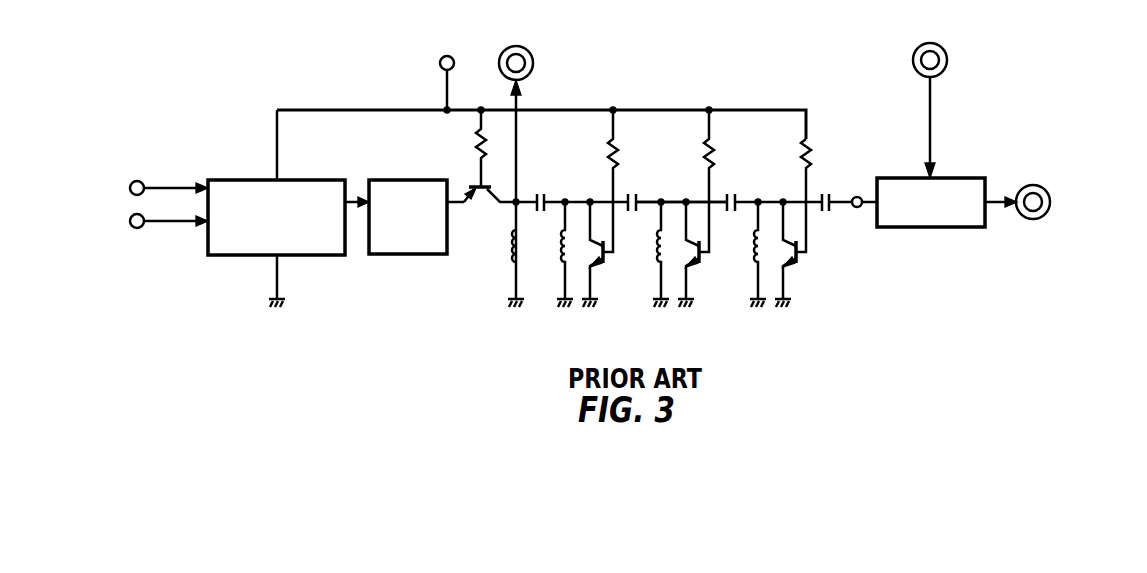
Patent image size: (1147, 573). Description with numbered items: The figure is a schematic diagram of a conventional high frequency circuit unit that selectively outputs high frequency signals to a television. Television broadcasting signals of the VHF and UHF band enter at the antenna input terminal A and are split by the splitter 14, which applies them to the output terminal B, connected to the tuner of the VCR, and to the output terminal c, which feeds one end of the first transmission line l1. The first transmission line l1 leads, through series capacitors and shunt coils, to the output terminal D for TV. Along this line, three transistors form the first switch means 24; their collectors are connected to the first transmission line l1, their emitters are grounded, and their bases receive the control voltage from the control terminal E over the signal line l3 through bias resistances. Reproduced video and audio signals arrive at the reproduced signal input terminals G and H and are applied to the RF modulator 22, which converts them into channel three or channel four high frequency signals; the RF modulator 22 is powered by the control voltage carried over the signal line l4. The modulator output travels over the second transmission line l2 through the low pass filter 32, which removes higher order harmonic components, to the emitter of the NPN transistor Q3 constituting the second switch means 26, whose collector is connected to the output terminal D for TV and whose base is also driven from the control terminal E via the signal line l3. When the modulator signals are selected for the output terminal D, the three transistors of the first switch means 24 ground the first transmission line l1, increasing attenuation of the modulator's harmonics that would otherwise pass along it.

The RF modulator 22 is at (244, 256).
The low pass filter 32 is at (400, 255).
The second switch means 26 is at (474, 186).
The transistor Q3 is at (482, 193).
The first switch means 24 is at (606, 263).
The splitter 14 is at (945, 178).
The first transmission line l1 is at (672, 202).
The second transmission line l2 is at (457, 205).
The signal line l3 is at (763, 110).
The signal line l4 is at (277, 150).
The antenna input terminal A is at (947, 57).
The output terminal B is at (1050, 197).
The output terminal c is at (857, 207).
The output terminal for TV D is at (516, 46).
The control terminal E is at (440, 66).
The reproduced signal input terminal G is at (137, 181).
The reproduced signal input terminal H is at (137, 228).